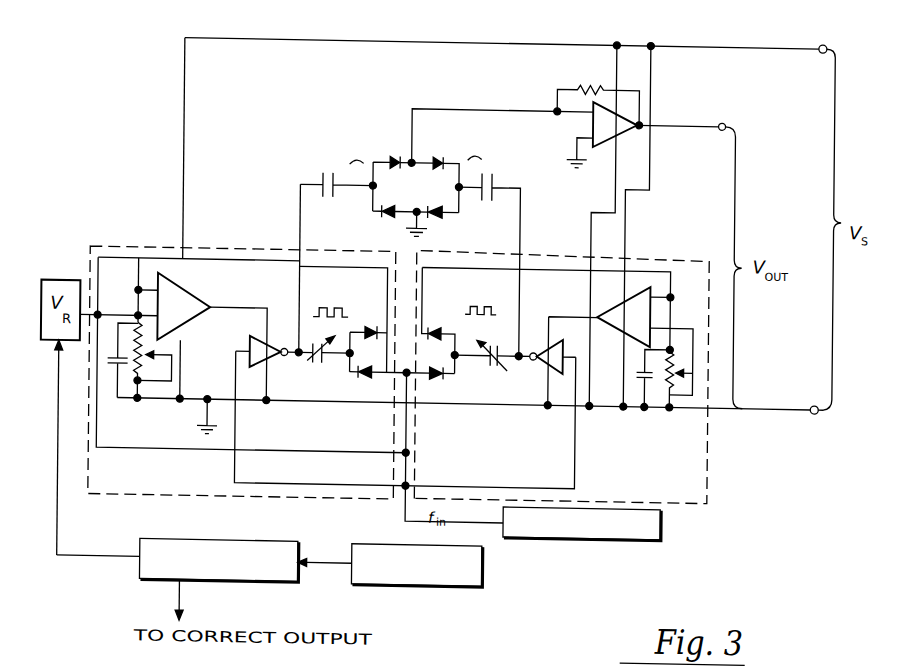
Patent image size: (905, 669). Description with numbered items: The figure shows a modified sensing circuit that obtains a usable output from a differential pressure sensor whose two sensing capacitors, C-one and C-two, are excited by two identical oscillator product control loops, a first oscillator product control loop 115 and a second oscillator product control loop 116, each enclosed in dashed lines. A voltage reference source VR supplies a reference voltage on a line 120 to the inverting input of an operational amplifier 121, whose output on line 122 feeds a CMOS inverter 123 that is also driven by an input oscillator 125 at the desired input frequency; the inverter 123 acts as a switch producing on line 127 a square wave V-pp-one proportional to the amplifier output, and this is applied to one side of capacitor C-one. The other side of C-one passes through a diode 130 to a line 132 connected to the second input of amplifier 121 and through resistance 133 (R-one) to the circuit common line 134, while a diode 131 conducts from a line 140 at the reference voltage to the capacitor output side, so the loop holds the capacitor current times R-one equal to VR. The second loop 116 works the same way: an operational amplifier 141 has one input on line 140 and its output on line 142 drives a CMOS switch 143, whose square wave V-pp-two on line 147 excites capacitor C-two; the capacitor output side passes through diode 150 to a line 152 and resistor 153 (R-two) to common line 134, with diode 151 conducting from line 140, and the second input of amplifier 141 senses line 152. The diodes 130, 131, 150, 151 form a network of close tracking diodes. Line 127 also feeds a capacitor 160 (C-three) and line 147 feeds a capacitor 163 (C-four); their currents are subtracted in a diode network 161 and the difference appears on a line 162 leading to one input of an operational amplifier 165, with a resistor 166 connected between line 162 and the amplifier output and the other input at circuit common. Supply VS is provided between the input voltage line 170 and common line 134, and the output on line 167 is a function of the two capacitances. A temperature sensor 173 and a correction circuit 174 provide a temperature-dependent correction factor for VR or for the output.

The first oscillator product control loop 115 is at (268, 502).
The second oscillator product control loop 116 is at (703, 501).
The reference voltage line 120 is at (126, 320).
The operational amplifier 121 is at (194, 304).
The output line 122 is at (233, 312).
The CMOS inverter 123 is at (248, 367).
The input oscillator 125 is at (566, 539).
The inverter output line 127 is at (298, 348).
The diode 130 is at (367, 330).
The diode 131 is at (363, 387).
The output line 132 is at (229, 244).
The resistance R1 133 is at (150, 355).
The circuit common line 134 is at (500, 427).
The reference line 140 is at (697, 361).
The operational amplifier 141 is at (652, 316).
The output line 142 is at (565, 313).
The CMOS inverter or switch 143 is at (546, 368).
The switch output line 147 is at (535, 351).
The diode 150 is at (427, 333).
The diode 151 is at (433, 377).
The line 152 is at (606, 267).
The resistor R2 153 is at (666, 382).
The capacitor C3 160 is at (318, 181).
The diode network 161 is at (395, 152).
The difference line 162 is at (452, 108).
The capacitor C4 163 is at (494, 198).
The operational amplifier 165 is at (621, 120).
The resistor 166 is at (578, 86).
The output line 167 is at (699, 119).
The input voltage line 170 is at (378, 42).
The temperature sensor 173 is at (421, 588).
The correction or compensation circuit 174 is at (255, 587).